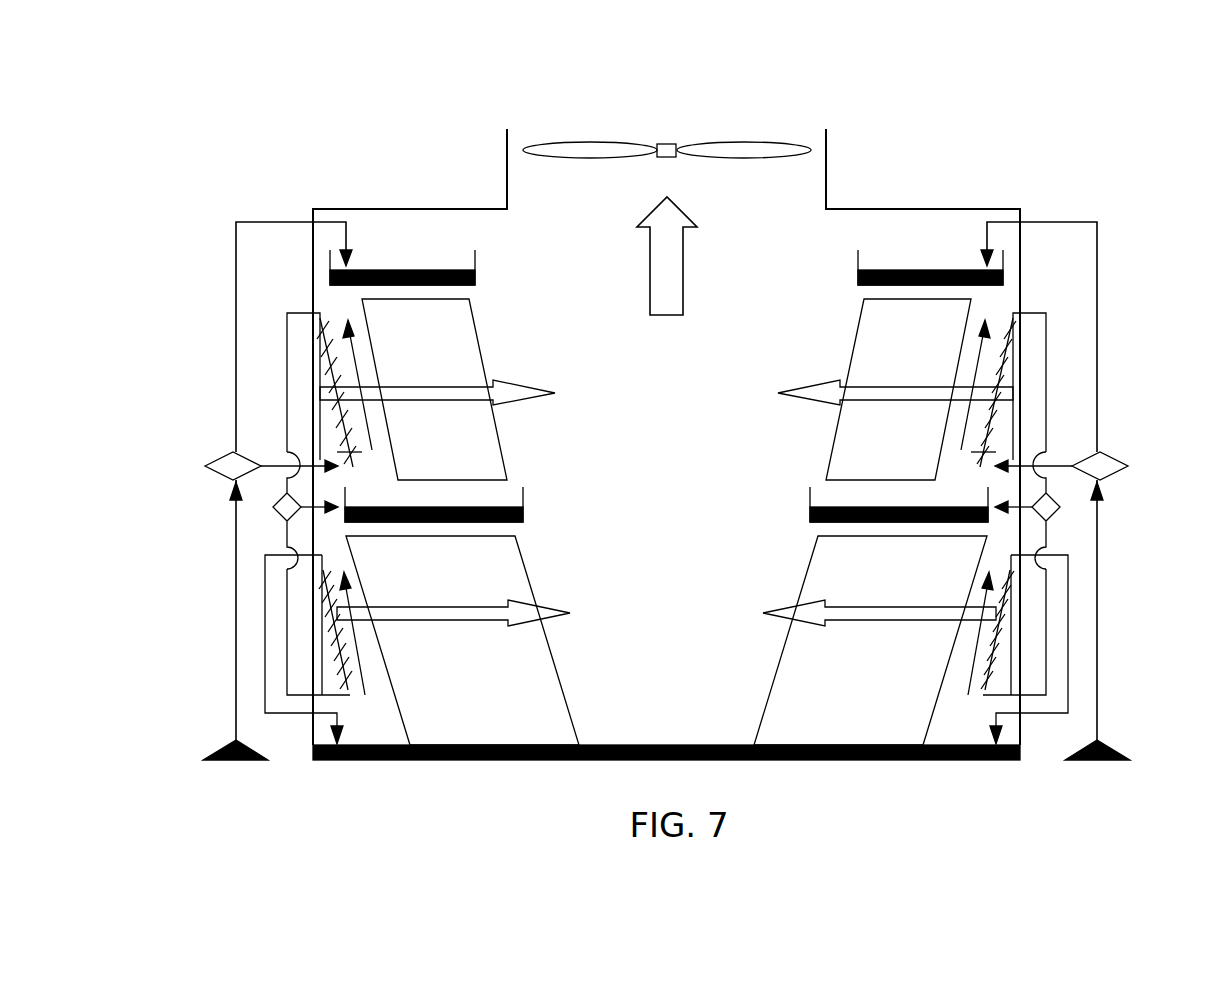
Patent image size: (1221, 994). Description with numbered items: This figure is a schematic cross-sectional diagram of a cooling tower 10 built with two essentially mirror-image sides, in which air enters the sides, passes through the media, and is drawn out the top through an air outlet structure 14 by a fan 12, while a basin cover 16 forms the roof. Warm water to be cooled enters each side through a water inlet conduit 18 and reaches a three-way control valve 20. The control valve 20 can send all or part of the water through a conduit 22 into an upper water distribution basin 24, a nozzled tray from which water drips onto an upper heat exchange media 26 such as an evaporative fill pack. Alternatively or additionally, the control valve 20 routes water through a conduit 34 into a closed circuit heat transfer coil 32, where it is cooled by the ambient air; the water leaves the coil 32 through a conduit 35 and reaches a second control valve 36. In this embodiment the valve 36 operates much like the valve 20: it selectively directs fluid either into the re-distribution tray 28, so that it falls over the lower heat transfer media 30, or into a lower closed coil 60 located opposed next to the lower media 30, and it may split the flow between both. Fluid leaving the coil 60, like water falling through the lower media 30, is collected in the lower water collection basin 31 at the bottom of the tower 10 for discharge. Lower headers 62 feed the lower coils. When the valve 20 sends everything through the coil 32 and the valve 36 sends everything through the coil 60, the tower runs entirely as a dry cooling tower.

The cooling tower 10 is at (497, 76).
The fan 12 is at (666, 128).
The air outlet structure 14 is at (507, 145).
The basin cover 16 is at (388, 205).
The water inlet conduit 18 is at (222, 746).
The control valve 20 is at (227, 477).
The conduit 22 is at (236, 372).
The upper water distribution basin 24 is at (478, 253).
The upper heat exchange media 26 is at (409, 343).
The re-distribution tray 28 is at (527, 490).
The lower heat transfer media 30 is at (429, 575).
The lower water collection basin 31 is at (980, 762).
The closed circuit heat transfer coil 32 is at (340, 427).
The conduit 34 is at (272, 463).
The conduit 35 is at (287, 333).
The second control valve 36 is at (275, 515).
The lower closed coil 60 is at (360, 666).
The lower distribution header 62 is at (292, 716).